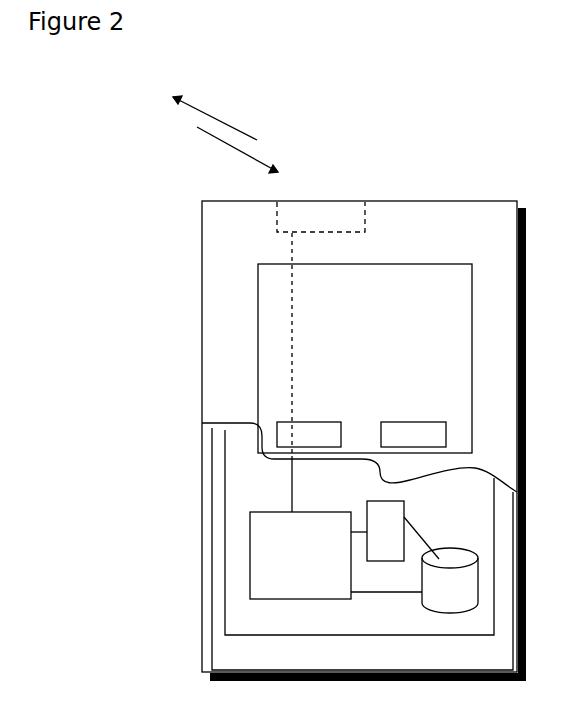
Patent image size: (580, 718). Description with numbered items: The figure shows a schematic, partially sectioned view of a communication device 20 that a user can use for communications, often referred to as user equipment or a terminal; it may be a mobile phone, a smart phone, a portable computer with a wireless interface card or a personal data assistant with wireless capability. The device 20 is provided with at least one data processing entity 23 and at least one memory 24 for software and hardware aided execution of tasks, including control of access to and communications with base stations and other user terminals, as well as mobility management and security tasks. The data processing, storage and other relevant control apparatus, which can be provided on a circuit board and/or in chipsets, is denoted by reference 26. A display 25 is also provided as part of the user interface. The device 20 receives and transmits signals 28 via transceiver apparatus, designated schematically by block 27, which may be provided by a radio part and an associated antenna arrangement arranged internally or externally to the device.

The communication device 20 is at (200, 256).
The data processing entity 23 is at (260, 533).
The memory 24 is at (445, 590).
The display 25 is at (273, 315).
The control apparatus 26 is at (252, 618).
The transceiver apparatus 27 is at (303, 218).
The signals 28 is at (197, 108).